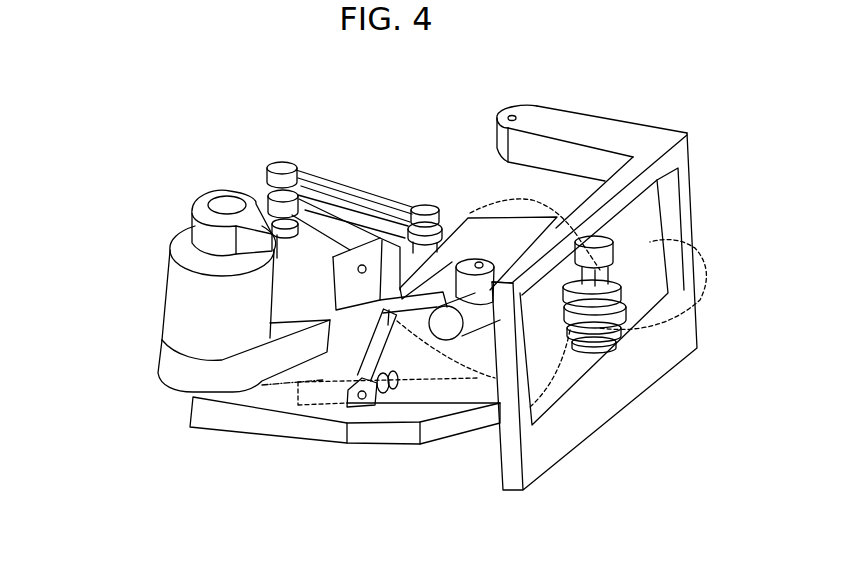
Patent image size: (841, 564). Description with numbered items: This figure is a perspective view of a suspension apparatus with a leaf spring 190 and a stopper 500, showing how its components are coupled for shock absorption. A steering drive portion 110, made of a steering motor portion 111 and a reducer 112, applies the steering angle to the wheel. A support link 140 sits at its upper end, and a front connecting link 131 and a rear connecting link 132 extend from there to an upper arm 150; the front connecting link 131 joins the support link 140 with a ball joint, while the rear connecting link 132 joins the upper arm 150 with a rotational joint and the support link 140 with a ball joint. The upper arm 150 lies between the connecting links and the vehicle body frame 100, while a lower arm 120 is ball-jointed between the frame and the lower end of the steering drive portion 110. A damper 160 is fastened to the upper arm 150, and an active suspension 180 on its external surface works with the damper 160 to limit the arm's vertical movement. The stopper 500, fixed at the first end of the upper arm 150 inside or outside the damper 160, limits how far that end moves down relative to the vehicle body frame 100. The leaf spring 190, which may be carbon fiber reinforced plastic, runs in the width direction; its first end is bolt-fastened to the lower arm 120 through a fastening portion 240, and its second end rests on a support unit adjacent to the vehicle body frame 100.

The vehicle body frame 100 is at (660, 140).
The steering drive portion 110 is at (166, 274).
The steering motor portion 111 is at (288, 310).
The reducer 112 is at (192, 331).
The lower arm 120 is at (323, 430).
The front connecting link 131 is at (322, 186).
The rear connecting link 132 is at (344, 228).
The support link 140 is at (217, 190).
The upper arm 150 is at (390, 313).
The damper 160 is at (472, 213).
The active suspension 180 is at (543, 170).
The leaf spring 190 is at (397, 408).
The fastening portion 240 is at (293, 383).
The stopper 500 is at (603, 340).